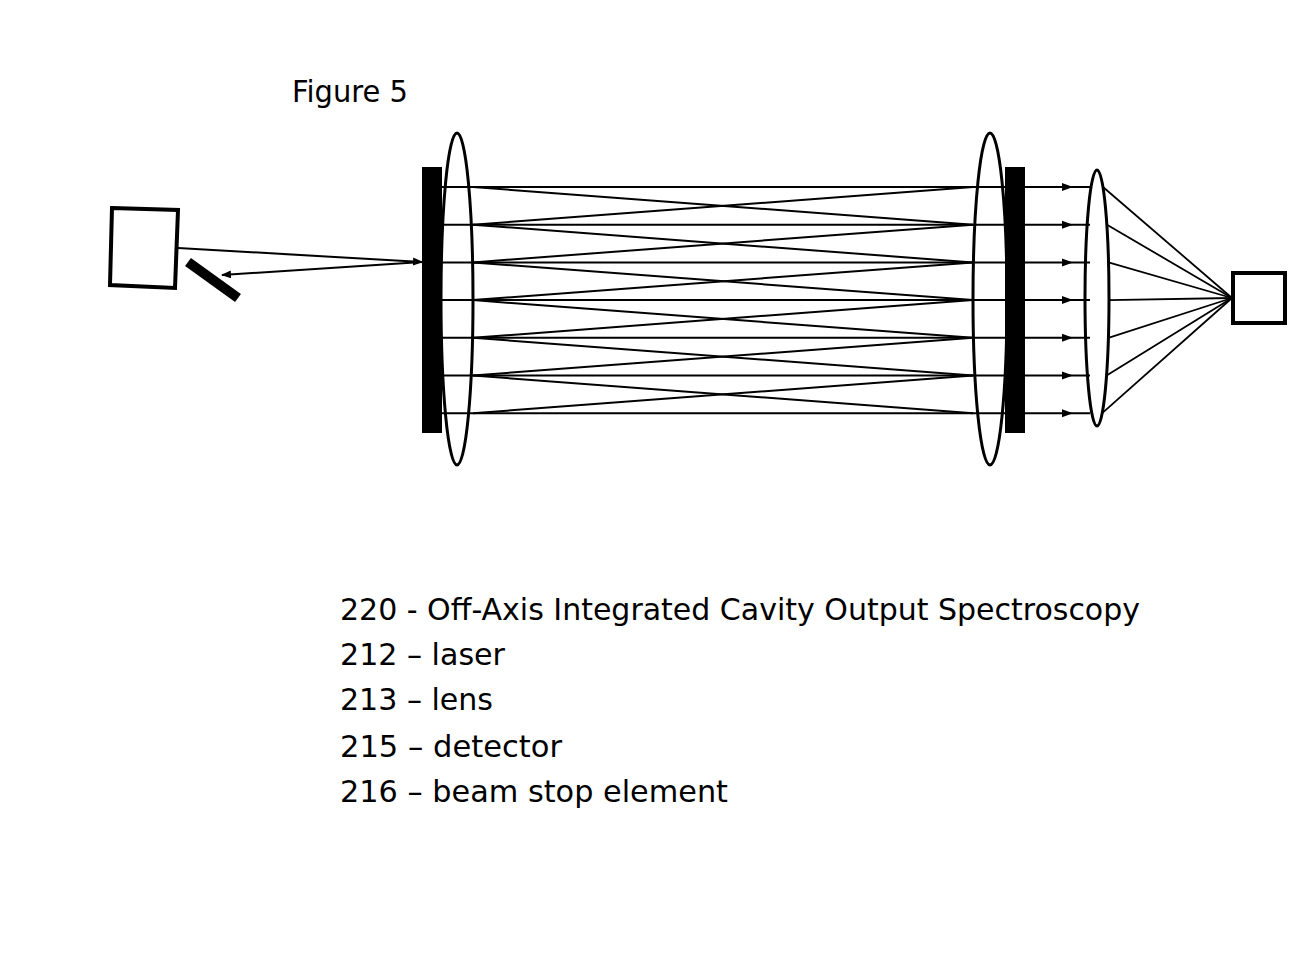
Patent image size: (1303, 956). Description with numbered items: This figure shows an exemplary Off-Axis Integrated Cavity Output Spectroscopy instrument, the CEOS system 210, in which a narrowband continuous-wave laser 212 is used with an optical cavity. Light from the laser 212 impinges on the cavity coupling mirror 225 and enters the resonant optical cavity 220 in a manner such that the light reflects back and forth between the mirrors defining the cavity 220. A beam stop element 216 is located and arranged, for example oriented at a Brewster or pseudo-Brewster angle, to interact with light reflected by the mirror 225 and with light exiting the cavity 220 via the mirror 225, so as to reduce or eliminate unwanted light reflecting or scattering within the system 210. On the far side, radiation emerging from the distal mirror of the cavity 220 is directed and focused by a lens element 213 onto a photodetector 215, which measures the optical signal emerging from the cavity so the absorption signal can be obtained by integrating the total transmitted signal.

The CEOS system 210 is at (610, 133).
The laser 212 is at (266, 219).
The lens element 213 is at (1148, 276).
The photodetector 215 is at (1268, 270).
The beam stop element 216 is at (305, 299).
The resonant optical cavity 220 is at (722, 289).
The cavity coupling mirror 225 is at (414, 299).